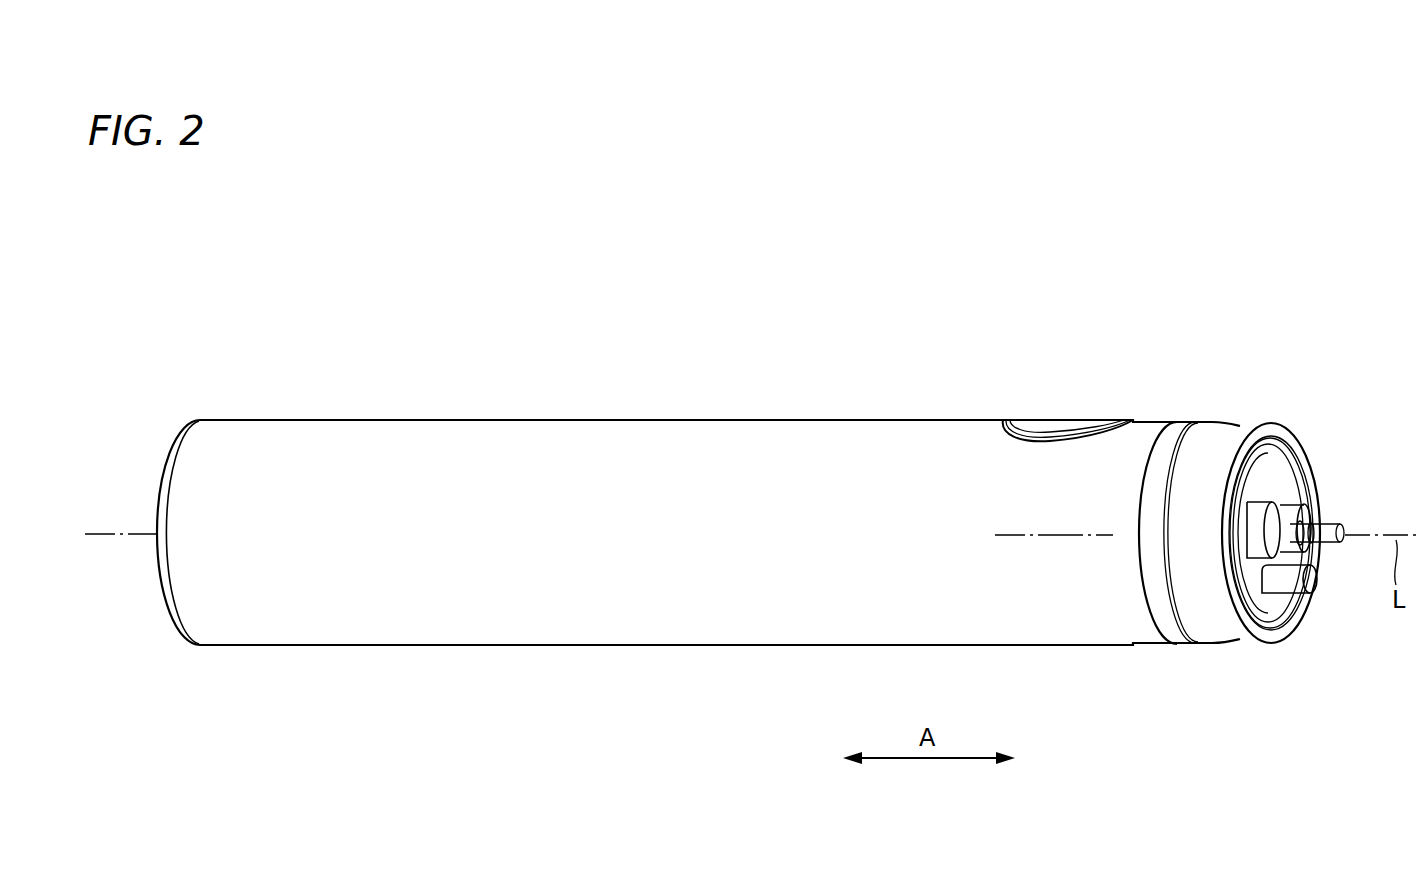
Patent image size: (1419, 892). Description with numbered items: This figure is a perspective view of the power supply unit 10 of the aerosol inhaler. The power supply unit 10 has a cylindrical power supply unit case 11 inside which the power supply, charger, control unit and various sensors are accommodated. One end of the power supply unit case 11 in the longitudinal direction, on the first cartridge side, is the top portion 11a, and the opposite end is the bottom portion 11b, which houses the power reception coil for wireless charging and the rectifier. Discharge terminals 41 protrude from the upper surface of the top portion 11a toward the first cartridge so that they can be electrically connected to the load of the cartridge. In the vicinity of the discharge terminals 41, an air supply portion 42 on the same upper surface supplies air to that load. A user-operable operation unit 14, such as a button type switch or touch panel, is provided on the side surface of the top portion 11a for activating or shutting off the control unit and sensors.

The power supply unit 10 is at (951, 328).
The power supply unit case 11 is at (623, 417).
The top portion 11a is at (1118, 605).
The bottom portion 11b is at (272, 493).
The operation unit 14 is at (1066, 420).
The discharge terminals 41 is at (1318, 524).
The air supply portion 42 is at (1303, 588).